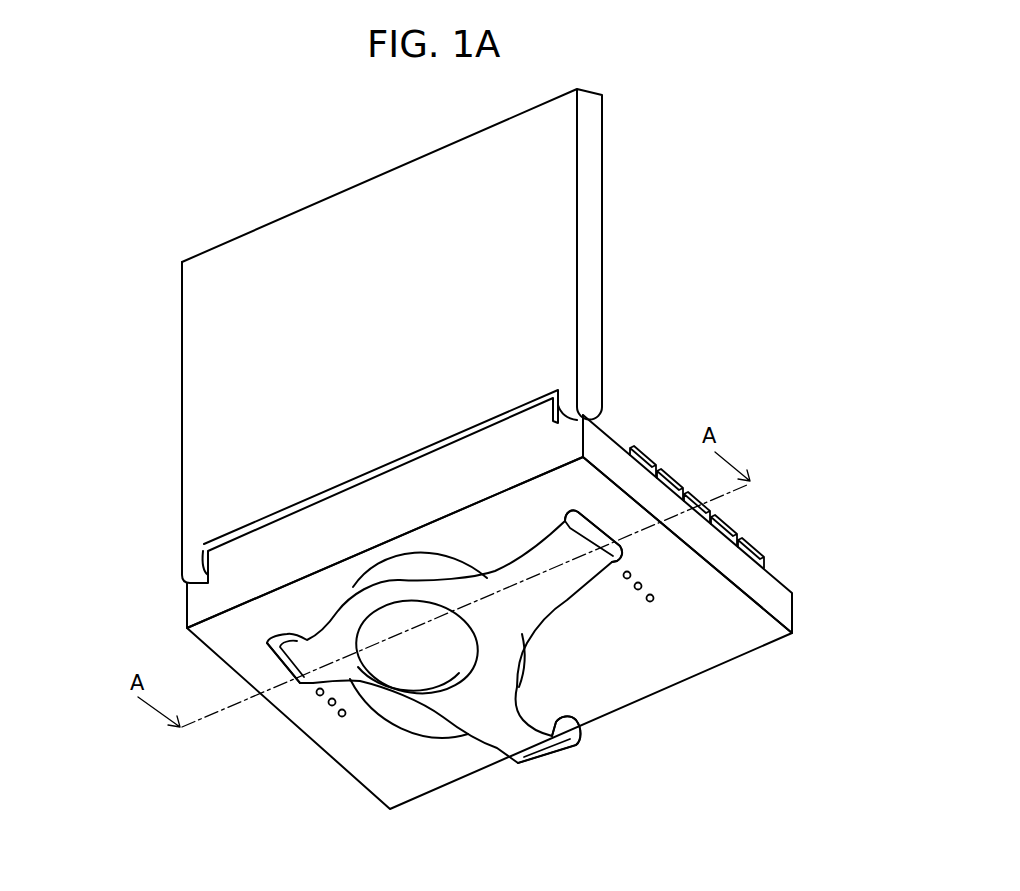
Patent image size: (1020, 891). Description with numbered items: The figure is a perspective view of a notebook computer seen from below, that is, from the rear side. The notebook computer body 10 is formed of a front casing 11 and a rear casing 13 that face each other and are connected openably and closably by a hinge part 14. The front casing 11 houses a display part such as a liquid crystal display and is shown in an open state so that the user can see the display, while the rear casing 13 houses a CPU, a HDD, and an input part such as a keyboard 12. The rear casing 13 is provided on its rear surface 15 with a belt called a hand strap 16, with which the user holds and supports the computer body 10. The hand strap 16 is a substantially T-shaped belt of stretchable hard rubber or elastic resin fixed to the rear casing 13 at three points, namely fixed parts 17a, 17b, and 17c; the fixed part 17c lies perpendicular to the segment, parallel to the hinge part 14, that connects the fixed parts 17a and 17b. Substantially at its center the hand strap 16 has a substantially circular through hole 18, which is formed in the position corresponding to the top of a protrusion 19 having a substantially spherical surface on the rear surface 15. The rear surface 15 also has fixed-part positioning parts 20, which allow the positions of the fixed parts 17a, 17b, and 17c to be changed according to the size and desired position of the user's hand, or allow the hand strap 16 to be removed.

The notebook computer body 10 is at (663, 325).
The front casing 11 is at (587, 185).
The keyboard 12 is at (727, 527).
The rear casing 13 is at (753, 582).
The hinge part 14 is at (345, 510).
The rear surface 15 is at (652, 630).
The hand strap 16 is at (473, 697).
The fixed part 17a is at (275, 643).
The fixed part 17b is at (588, 527).
The fixed part 17c is at (582, 737).
The through hole 18 is at (412, 663).
The protrusion 19 is at (410, 568).
The fixed-part positioning parts 20 is at (652, 598).